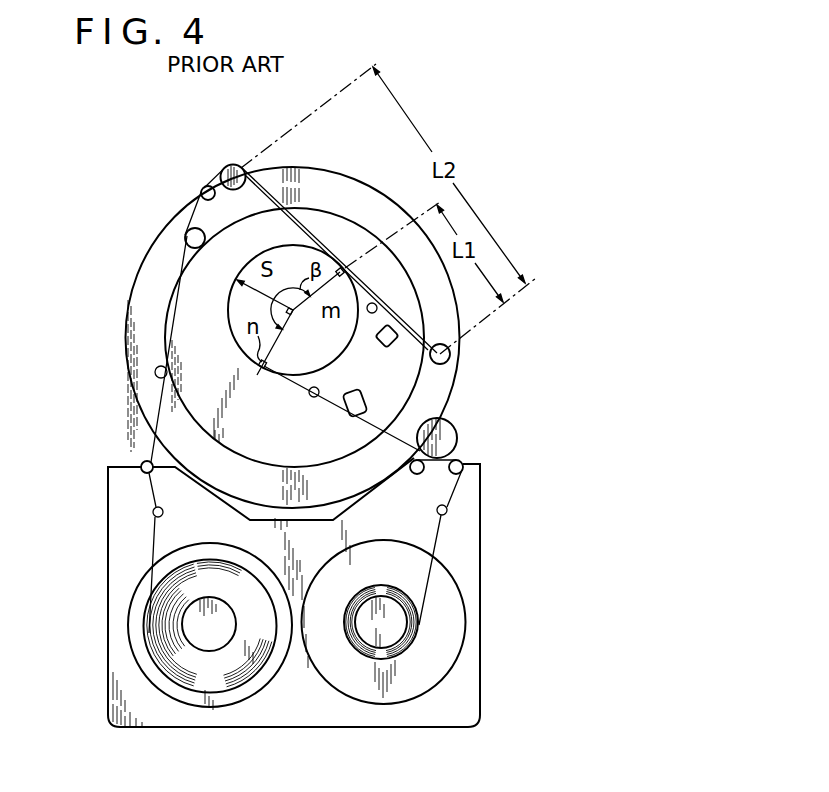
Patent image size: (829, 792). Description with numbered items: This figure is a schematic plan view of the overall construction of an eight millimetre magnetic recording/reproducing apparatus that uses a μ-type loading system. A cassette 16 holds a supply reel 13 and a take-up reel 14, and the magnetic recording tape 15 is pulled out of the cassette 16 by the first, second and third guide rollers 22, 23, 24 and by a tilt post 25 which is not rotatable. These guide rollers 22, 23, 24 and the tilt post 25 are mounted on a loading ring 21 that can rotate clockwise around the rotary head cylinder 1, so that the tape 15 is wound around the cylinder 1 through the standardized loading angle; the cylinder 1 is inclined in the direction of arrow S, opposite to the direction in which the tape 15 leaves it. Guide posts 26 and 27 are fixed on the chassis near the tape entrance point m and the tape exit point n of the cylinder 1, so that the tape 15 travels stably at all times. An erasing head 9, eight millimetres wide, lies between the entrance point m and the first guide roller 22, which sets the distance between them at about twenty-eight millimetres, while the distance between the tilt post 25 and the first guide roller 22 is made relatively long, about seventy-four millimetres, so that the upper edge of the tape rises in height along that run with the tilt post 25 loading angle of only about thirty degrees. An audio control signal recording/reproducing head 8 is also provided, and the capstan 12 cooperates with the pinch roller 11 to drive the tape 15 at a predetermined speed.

The rotary head cylinder 1 is at (229, 319).
The audio control signal recording/reproducing head 8 is at (347, 417).
The full-width erase head 9 is at (393, 340).
The pinch roller 11 is at (454, 427).
The capstan 12 is at (416, 474).
The supply reel 13 is at (127, 632).
The take-up reel 14 is at (462, 633).
The magnetic recording tape 15 is at (290, 217).
The cassette 16 is at (481, 585).
The loading ring 21 is at (345, 172).
The first guide roller 22 is at (451, 357).
The second guide roller 23 is at (232, 164).
The third guide roller 24 is at (190, 233).
The tilt post 25 is at (204, 188).
The guide post 26 is at (376, 304).
The guide post 27 is at (311, 396).